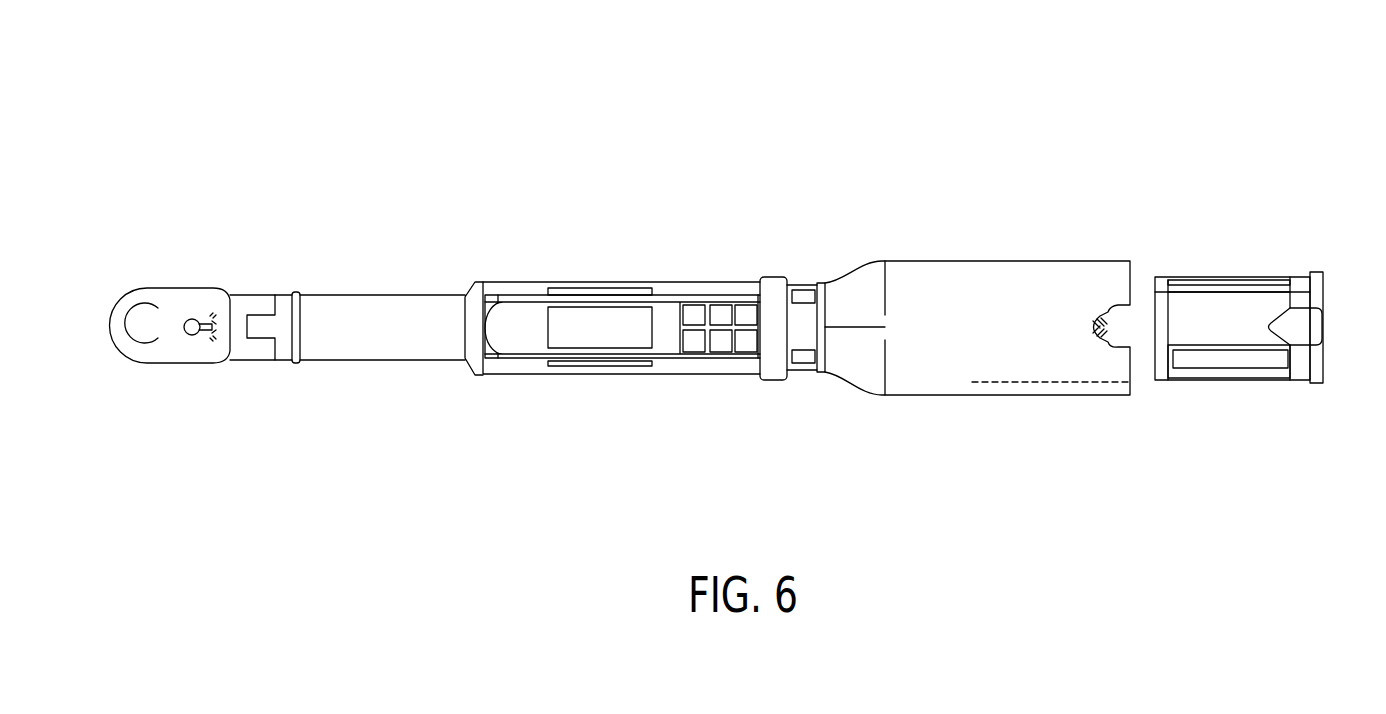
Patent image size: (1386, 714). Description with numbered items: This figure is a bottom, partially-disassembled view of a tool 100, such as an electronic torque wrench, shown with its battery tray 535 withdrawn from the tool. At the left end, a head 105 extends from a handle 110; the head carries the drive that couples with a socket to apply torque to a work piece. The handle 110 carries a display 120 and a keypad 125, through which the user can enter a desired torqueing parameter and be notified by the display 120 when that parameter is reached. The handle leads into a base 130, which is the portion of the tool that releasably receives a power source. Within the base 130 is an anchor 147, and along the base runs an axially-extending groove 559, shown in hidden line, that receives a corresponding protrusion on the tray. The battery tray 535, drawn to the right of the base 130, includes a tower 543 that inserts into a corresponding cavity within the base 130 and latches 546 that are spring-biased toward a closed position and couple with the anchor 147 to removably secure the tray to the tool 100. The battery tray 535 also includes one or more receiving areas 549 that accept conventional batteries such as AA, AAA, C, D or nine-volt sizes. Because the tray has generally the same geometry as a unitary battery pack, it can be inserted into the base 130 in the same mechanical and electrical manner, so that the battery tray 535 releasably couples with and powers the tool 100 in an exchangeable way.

The tool 100 is at (308, 106).
The head 105 is at (148, 333).
The handle 110 is at (685, 290).
The display 120 is at (576, 338).
The keypad 125 is at (745, 345).
The base 130 is at (1013, 292).
The anchor 147 is at (1098, 317).
The battery tray 535 is at (1257, 276).
The tower 543 is at (1207, 320).
The latches 546 is at (1292, 320).
The receiving areas 549 is at (1227, 355).
The groove 559 is at (1043, 395).